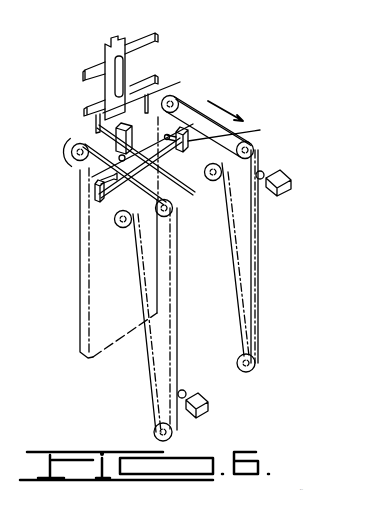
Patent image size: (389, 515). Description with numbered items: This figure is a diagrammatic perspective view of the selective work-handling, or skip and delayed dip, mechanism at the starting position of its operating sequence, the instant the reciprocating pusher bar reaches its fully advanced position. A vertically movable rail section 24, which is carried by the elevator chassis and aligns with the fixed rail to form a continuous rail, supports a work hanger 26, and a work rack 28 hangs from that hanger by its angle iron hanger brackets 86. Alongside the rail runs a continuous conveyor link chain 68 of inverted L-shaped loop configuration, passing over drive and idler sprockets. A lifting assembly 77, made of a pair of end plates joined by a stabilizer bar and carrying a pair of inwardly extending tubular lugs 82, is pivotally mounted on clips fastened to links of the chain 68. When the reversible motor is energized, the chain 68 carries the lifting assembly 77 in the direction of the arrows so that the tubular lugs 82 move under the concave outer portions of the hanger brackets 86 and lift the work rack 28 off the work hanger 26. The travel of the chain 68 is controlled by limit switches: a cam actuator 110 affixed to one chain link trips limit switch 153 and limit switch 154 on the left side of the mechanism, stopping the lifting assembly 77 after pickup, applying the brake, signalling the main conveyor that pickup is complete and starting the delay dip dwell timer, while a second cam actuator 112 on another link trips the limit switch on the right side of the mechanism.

The vertically movable rail section 24 is at (83, 76).
The work hanger 26 is at (126, 42).
The work rack 28 is at (78, 242).
The continuous conveyor link chain 68 is at (260, 300).
The lifting assembly 77 is at (158, 178).
The tubular lug 82 is at (68, 174).
The angle iron hanger bracket 86 is at (147, 72).
The cam actuator 110 is at (108, 206).
The cam actuator 112 is at (262, 176).
The limit switch LS3 153 is at (114, 140).
The limit switch LS4 154 is at (205, 398).